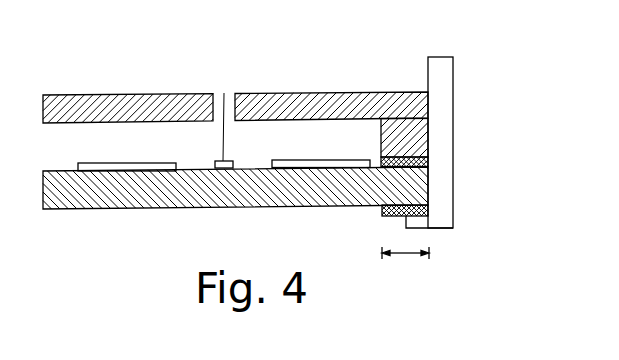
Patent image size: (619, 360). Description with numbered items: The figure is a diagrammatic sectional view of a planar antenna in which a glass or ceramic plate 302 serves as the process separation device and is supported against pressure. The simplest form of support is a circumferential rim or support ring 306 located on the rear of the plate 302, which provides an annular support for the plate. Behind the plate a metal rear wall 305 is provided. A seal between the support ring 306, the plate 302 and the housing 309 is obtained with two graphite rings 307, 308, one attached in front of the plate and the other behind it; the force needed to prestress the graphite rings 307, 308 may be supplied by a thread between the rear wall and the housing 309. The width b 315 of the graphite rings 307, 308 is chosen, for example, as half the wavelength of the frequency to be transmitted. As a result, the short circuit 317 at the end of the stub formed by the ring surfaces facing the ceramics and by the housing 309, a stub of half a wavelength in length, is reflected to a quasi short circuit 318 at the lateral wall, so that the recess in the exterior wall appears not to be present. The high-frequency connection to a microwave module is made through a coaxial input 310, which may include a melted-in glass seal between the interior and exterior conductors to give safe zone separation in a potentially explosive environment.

The ceramic plate 302 is at (109, 201).
The metal rear wall 305 is at (419, 96).
The support ring 306 is at (418, 133).
The graphite ring 307 is at (418, 154).
The graphite ring 308 is at (439, 211).
The housing 309 is at (430, 231).
The coaxial input 310 is at (224, 93).
The width b 315 is at (406, 254).
The short circuit 317 is at (443, 183).
The quasi short circuit 318 is at (372, 194).